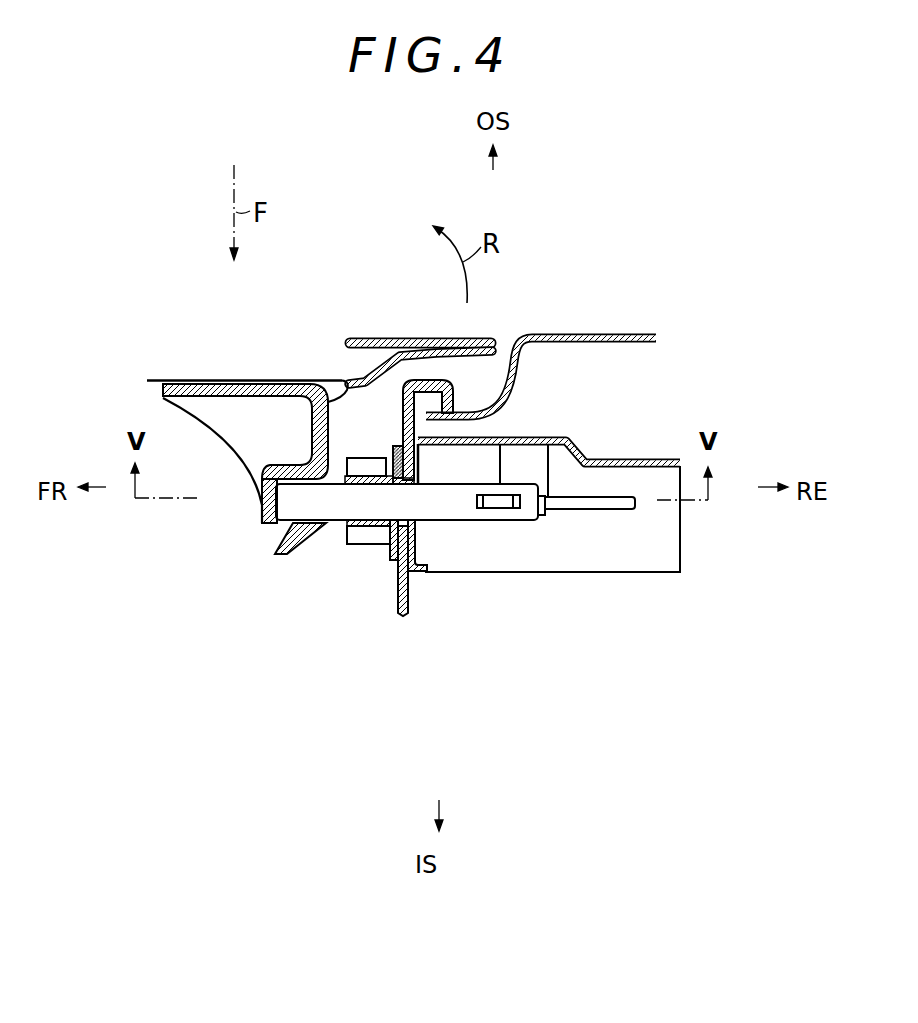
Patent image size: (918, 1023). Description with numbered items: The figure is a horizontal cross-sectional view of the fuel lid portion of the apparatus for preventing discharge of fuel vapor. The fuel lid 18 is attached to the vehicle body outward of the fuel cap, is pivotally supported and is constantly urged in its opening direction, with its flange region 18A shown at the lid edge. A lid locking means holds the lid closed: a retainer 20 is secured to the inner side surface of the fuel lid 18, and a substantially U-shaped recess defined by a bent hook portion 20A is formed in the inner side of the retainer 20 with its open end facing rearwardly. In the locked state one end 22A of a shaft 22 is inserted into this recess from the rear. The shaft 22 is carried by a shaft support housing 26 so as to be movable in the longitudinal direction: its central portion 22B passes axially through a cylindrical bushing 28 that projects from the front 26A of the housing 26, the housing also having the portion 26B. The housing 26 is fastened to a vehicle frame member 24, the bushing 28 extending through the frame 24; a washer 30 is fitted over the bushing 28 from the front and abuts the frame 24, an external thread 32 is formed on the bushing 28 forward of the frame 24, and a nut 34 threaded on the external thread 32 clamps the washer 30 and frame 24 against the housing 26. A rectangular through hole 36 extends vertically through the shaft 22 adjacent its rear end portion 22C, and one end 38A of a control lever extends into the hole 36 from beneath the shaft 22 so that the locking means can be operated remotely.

The fuel lid 18 is at (407, 333).
The fuel lid 18A is at (337, 388).
The retainer 20 is at (229, 468).
The bent hook portion 20A is at (262, 507).
The shaft 22 is at (477, 525).
The one end of shaft 22A is at (314, 512).
The central portion of shaft 22B is at (410, 503).
The rear end portion of shaft 22C is at (528, 486).
The vehicle frame member 24 is at (410, 605).
The shaft support housing 26 is at (622, 454).
The front of shaft support housing 26A is at (413, 569).
The body panel flange 26B is at (512, 430).
The cylindrical bushing 28 is at (396, 447).
The washer 30 is at (394, 400).
The external thread 32 is at (360, 458).
The nut 34 is at (372, 546).
The rectangular through hole 36 is at (520, 505).
The one end of lever 38A is at (498, 496).